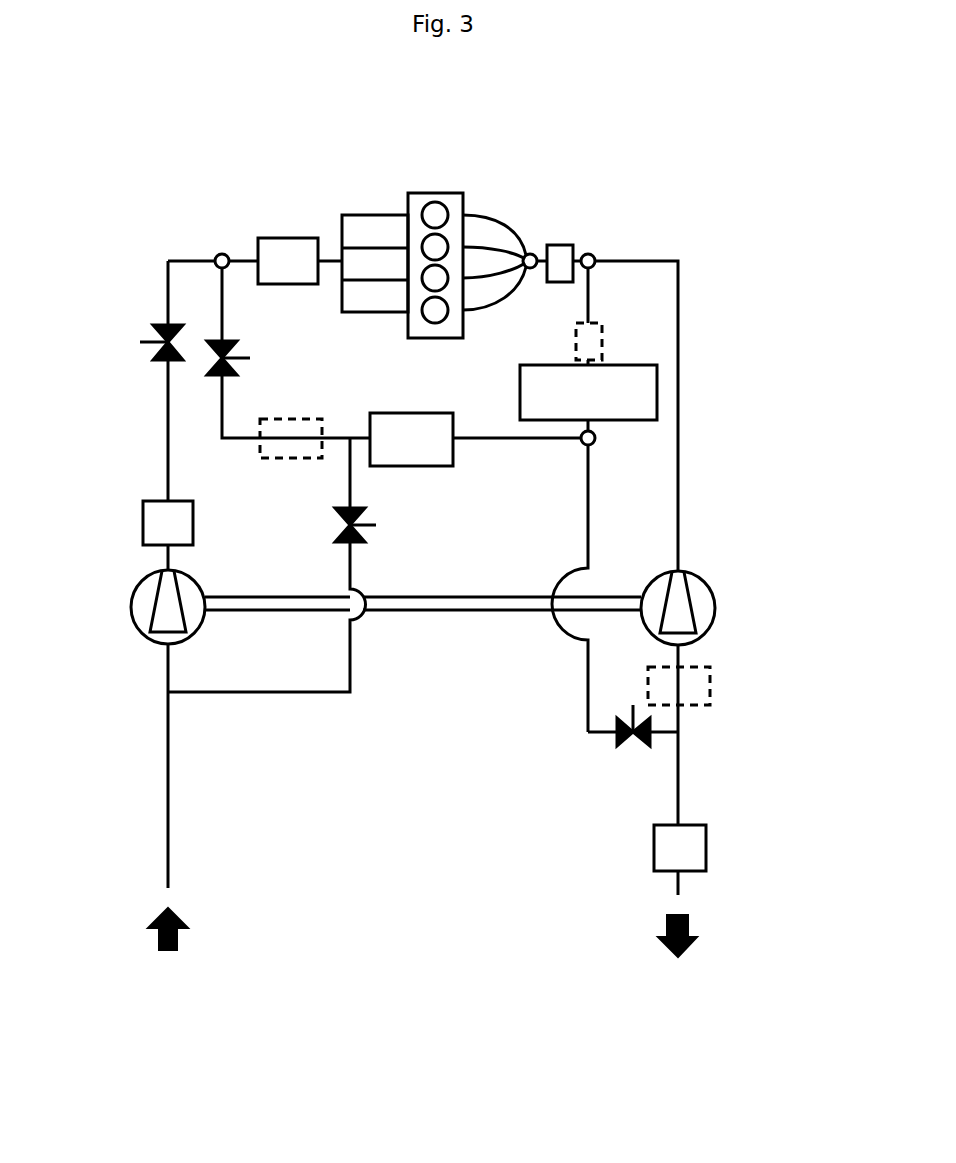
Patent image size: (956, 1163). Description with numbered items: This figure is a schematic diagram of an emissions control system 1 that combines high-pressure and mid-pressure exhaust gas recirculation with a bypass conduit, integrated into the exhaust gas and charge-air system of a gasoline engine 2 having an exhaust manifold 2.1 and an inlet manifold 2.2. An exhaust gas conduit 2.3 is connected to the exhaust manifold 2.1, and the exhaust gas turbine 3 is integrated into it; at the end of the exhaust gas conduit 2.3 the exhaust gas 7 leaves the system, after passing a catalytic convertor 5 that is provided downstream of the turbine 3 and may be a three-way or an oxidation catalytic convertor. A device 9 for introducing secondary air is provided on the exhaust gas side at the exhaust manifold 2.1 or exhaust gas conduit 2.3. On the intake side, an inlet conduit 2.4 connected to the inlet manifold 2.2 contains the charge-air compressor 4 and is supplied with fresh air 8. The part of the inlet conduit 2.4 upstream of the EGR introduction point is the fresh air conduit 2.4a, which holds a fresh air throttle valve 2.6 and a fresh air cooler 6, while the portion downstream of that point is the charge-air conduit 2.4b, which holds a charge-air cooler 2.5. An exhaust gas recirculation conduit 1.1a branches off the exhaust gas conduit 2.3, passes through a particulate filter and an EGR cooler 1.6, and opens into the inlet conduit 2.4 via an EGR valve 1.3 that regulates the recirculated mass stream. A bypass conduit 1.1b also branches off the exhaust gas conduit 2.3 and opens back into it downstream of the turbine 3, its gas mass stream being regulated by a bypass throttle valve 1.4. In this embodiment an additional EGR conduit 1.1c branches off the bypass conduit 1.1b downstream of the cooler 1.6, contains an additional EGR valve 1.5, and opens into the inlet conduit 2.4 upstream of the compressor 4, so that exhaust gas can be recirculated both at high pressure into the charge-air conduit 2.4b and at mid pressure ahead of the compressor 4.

The emissions control system 1 is at (757, 216).
The gasoline engine 2 is at (455, 200).
The exhaust manifold 2.1 is at (508, 222).
The inlet manifold 2.2 is at (370, 214).
The exhaust gas conduit 2.3 is at (678, 370).
The inlet conduit 2.4 is at (160, 452).
The fresh air conduit 2.4a is at (168, 423).
The charge-air conduit 2.4b is at (240, 258).
The charge-air cooler 2.5 is at (288, 261).
The fresh air throttle valve 2.6 is at (140, 342).
The exhaust gas turbine 3 is at (708, 600).
The charge-air compressor 4 is at (140, 603).
The catalytic convertor 5 is at (710, 690).
The fresh air cooler 6 is at (168, 523).
The exhaust gas 7 is at (690, 925).
The fresh air 8 is at (180, 935).
The device for introducing secondary air 9 is at (571, 263).
The exhaust gas recirculation conduit 1.1a is at (222, 298).
The bypass conduit 1.1b is at (588, 495).
The additional exhaust gas recirculation conduit 1.1c is at (350, 640).
The EGR valve 1.3 is at (250, 358).
The bypass throttle valve 1.4 is at (617, 747).
The additional EGR valve 1.5 is at (358, 532).
The EGR cooler 1.6 is at (411, 439).